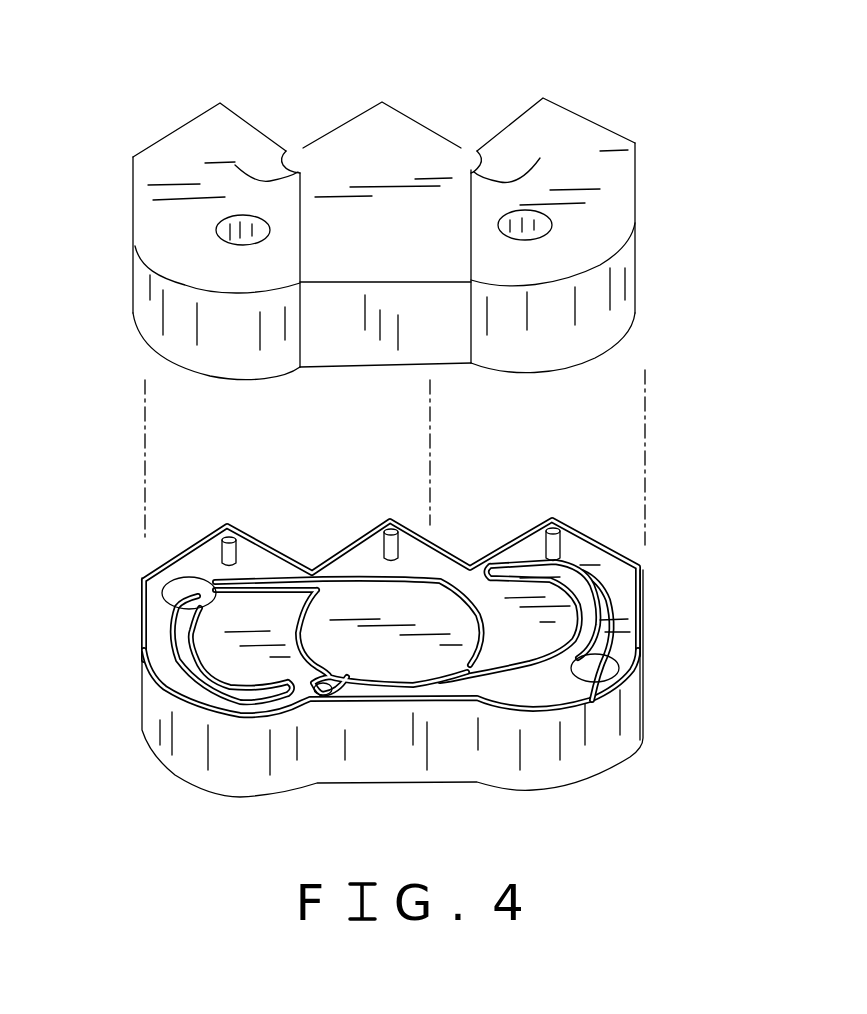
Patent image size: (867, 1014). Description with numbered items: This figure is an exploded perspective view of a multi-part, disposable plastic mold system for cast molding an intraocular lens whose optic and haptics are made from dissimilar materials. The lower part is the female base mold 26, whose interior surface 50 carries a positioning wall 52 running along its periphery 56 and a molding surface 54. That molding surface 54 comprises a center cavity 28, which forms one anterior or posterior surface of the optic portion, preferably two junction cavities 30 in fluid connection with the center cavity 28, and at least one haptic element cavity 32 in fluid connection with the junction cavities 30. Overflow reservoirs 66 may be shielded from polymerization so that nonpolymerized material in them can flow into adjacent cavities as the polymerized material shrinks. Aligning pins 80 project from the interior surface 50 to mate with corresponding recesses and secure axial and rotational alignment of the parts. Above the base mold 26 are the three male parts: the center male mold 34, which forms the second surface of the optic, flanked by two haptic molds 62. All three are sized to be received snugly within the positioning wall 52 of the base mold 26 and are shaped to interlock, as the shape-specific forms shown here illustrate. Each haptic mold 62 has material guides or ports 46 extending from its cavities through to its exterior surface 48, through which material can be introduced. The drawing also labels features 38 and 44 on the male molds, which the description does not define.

The female base mold 26 is at (645, 683).
The center cavity 28 is at (408, 662).
The junction cavities 30 is at (330, 590).
The haptic element cavity 32 is at (182, 657).
The center male mold 34 is at (420, 132).
The notch 38 is at (288, 153).
The slot 44 is at (235, 165).
The material guides or ports 46 is at (238, 227).
The exterior surface 48 is at (183, 150).
The interior surface 50 is at (628, 610).
The positioning wall 52 is at (583, 538).
The molding surface 54 is at (377, 603).
The periphery 56 is at (647, 650).
The haptic molds 62 is at (153, 307).
The overflow reservoirs 66 is at (182, 590).
The aligning pins 80 is at (228, 530).